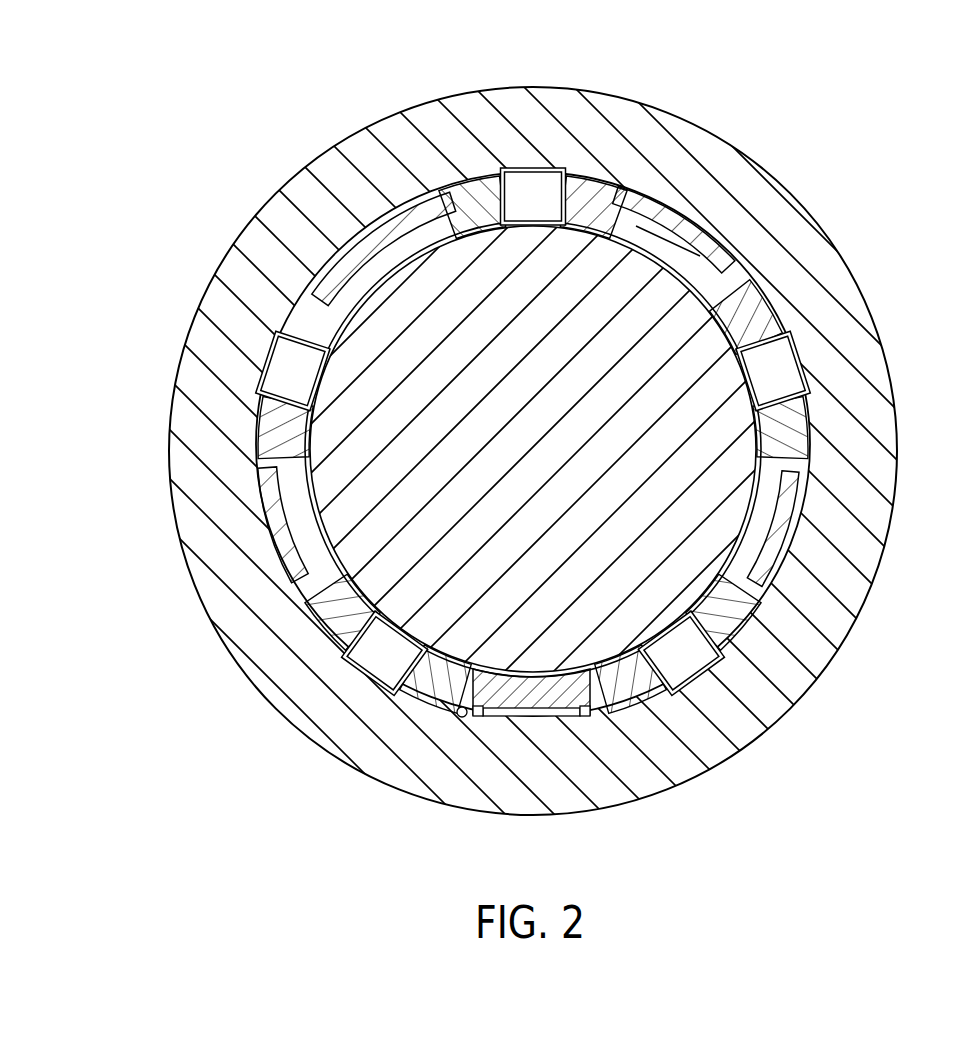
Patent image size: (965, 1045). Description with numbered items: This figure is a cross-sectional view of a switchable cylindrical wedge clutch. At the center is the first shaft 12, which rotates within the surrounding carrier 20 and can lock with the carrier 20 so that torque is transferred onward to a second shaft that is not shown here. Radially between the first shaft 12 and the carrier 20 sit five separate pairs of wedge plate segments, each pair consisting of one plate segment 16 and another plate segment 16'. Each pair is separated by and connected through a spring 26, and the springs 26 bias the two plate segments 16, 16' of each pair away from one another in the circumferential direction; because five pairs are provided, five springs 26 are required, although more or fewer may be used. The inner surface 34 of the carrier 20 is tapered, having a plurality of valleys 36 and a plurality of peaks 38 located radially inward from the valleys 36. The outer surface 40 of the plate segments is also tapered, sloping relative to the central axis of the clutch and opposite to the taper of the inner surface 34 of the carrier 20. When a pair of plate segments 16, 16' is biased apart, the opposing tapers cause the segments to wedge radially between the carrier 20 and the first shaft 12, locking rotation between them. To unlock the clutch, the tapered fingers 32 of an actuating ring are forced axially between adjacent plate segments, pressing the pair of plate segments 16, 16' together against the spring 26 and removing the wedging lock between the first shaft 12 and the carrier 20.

The first shaft 12 is at (693, 453).
The plate segment 16 is at (470, 386).
The plate segment 16' is at (494, 316).
The carrier 20 is at (707, 145).
The spring 26 is at (533, 188).
The tapered finger 32 is at (693, 247).
The inner surface 34 is at (472, 700).
The valley 36 is at (360, 680).
The peak 38 is at (533, 718).
The outer surface 40 is at (463, 716).